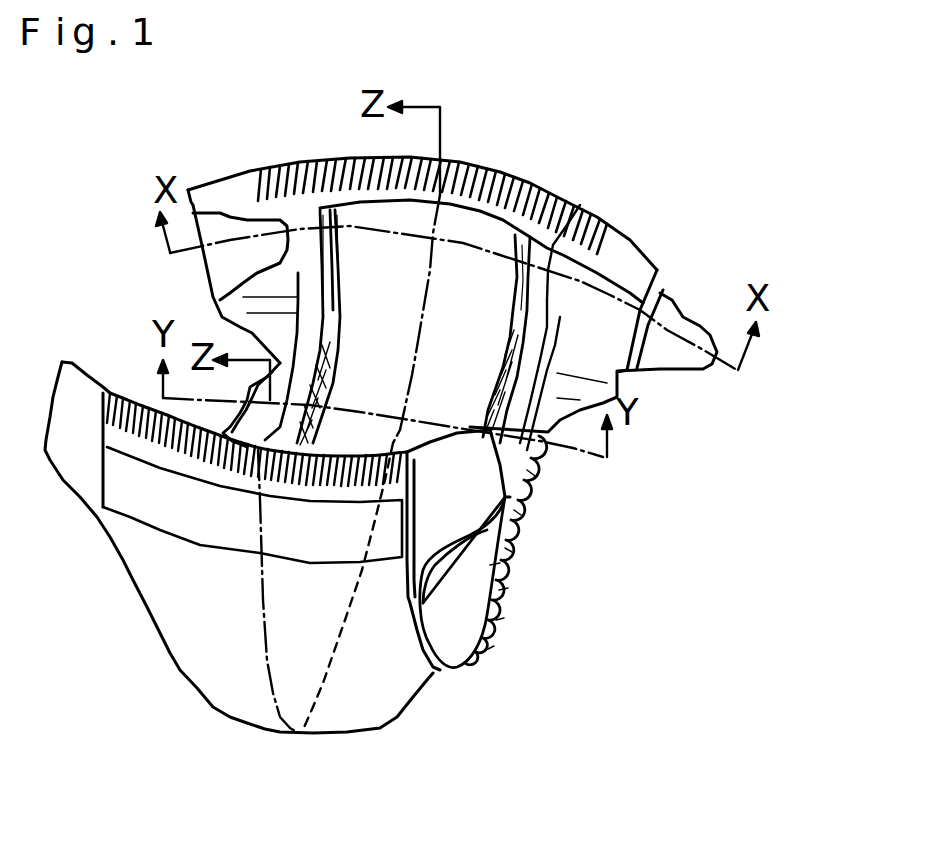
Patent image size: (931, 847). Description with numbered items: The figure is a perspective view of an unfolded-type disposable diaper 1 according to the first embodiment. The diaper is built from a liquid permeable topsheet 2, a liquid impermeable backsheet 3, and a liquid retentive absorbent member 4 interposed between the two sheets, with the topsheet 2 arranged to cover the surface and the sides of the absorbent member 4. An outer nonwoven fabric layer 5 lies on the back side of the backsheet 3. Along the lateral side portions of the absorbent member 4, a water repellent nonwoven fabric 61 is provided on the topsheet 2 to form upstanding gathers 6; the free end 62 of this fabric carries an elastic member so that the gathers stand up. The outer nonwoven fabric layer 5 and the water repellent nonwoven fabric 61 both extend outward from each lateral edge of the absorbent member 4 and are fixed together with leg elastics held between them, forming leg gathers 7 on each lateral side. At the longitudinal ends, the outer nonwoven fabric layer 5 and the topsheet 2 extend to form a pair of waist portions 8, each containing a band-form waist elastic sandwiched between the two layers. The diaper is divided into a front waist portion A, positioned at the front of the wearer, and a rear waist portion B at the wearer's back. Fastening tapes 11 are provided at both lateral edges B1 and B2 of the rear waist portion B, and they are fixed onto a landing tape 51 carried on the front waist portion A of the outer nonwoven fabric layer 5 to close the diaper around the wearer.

The disposable diaper 1 is at (441, 255).
The liquid permeable topsheet 2 is at (481, 201).
The liquid impermeable backsheet 3 is at (277, 584).
The liquid retentive absorbent member 4 is at (567, 296).
The outer nonwoven fabric layer 5 is at (462, 634).
The upstanding gathers 6 is at (390, 328).
The leg gathers 7 is at (415, 481).
The waist portions 8 is at (351, 291).
The fastening tapes 11 is at (430, 330).
The landing tape 51 is at (228, 531).
The water repellent nonwoven fabric 61 is at (362, 261).
The free end 62 is at (428, 298).
The front waist portion A is at (235, 619).
The rear waist portion B is at (774, 397).
The lateral edge of rear waist portion B1 is at (694, 235).
The lateral edge of rear waist portion B2 is at (202, 163).